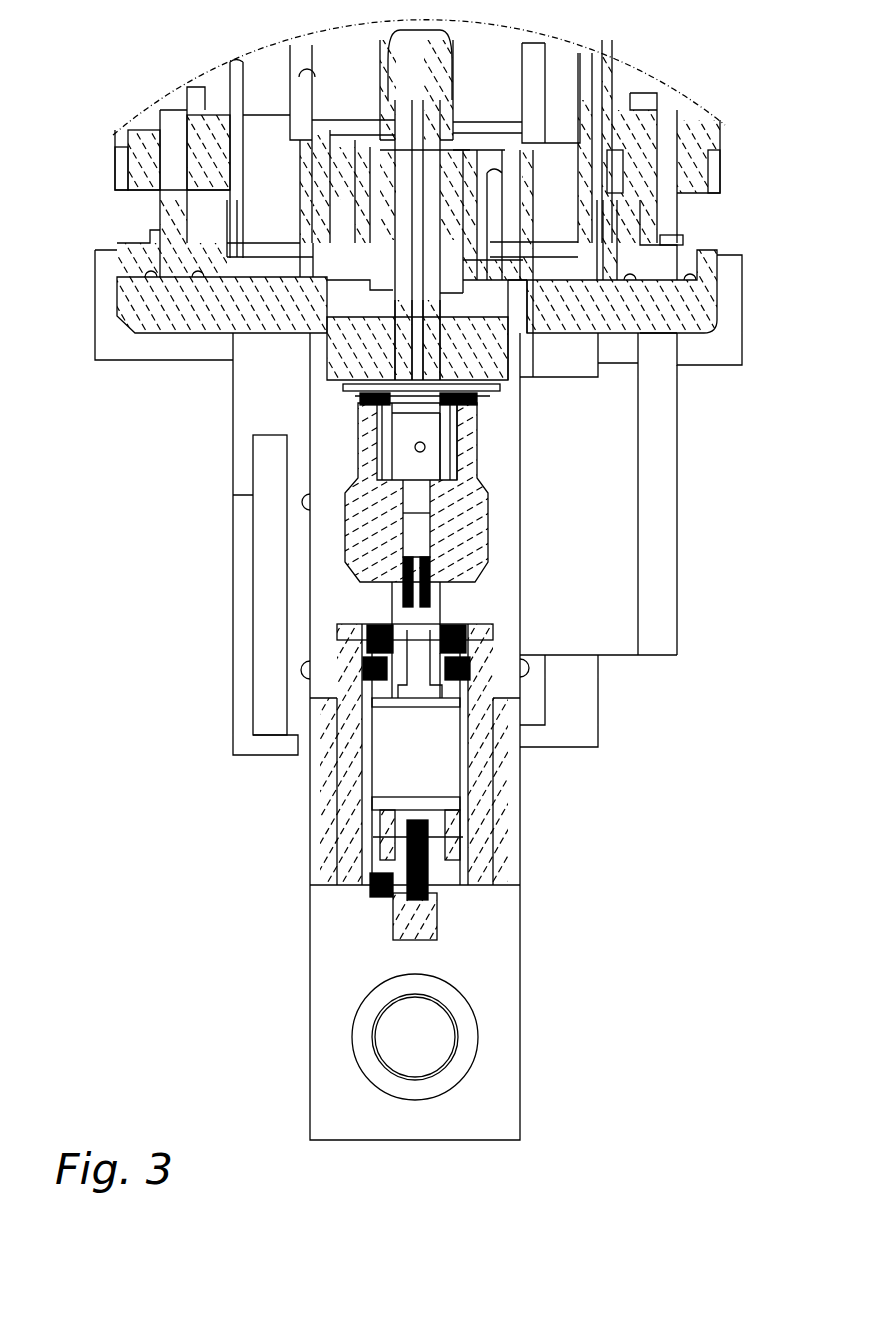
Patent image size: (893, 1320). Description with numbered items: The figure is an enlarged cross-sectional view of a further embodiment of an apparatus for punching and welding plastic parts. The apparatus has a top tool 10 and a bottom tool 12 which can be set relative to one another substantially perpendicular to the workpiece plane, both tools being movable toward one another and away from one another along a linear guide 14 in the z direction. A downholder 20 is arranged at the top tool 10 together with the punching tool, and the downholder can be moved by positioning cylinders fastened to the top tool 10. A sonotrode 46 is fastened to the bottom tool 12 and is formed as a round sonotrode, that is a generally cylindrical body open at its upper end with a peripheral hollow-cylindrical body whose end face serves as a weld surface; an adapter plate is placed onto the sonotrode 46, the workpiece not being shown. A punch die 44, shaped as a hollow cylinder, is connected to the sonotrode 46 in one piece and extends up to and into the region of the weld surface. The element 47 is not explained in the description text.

The top tool 10 is at (265, 197).
The downholder 20 is at (696, 322).
The linear guide 14 is at (365, 418).
The punch die 44 is at (470, 420).
The sonotrode 46 is at (468, 447).
The bottom tool 12 is at (330, 598).
The lower cylinder housing 47 is at (400, 750).